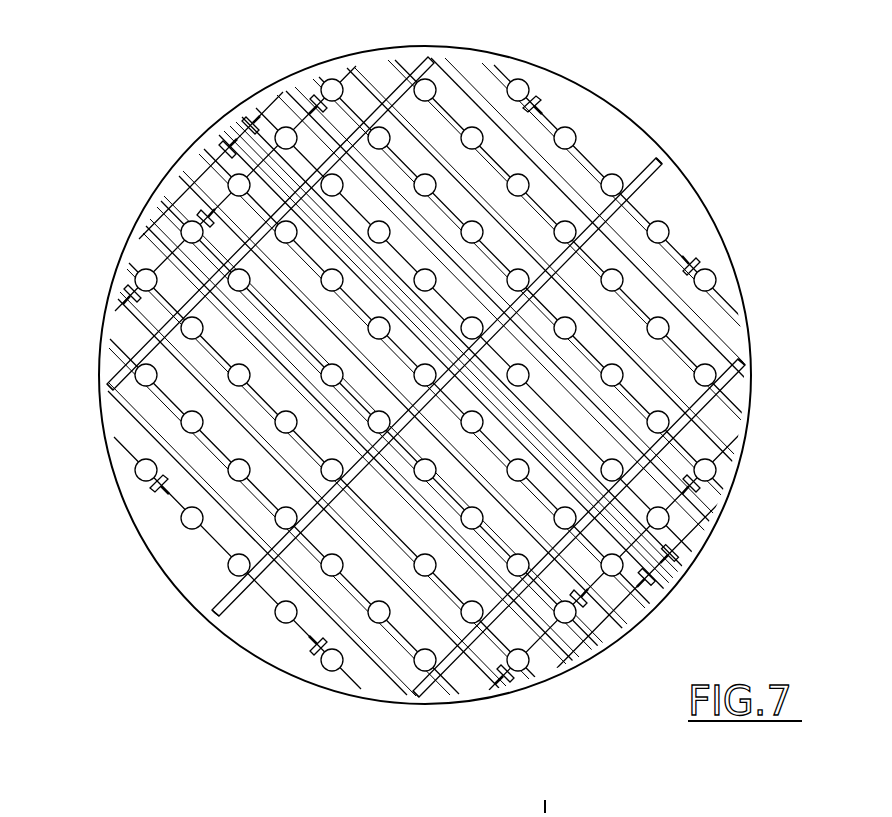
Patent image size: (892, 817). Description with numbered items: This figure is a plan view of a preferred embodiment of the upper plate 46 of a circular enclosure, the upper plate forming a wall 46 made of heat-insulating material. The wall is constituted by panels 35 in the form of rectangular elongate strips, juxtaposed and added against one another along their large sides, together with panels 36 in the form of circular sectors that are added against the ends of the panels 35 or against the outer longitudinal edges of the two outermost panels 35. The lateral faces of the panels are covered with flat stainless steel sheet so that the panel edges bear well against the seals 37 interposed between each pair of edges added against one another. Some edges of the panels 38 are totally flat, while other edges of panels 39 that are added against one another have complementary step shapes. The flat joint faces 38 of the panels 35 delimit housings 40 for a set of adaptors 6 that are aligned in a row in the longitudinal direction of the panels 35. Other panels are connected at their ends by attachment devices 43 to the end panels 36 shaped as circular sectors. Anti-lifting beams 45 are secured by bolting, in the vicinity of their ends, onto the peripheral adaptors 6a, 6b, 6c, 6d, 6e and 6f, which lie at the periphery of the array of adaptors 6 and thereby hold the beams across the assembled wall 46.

The adaptor 6 is at (432, 195).
The peripheral adaptor 6a is at (443, 72).
The peripheral adaptor 6b is at (645, 152).
The peripheral adaptor 6c is at (712, 368).
The peripheral adaptor 6d is at (410, 688).
The peripheral adaptor 6e is at (228, 570).
The peripheral adaptor 6f is at (118, 382).
The panel 35 is at (200, 243).
The panel in the form of circular sector 36 is at (247, 627).
The seal 37 is at (215, 382).
The flat edge of panel 38 is at (172, 258).
The stepped edge of panel 39 is at (183, 510).
The housing 40 is at (328, 268).
The attachment device 43 is at (686, 492).
The anti-lifting beam 45 is at (658, 172).
The upper plate 46 is at (587, 120).